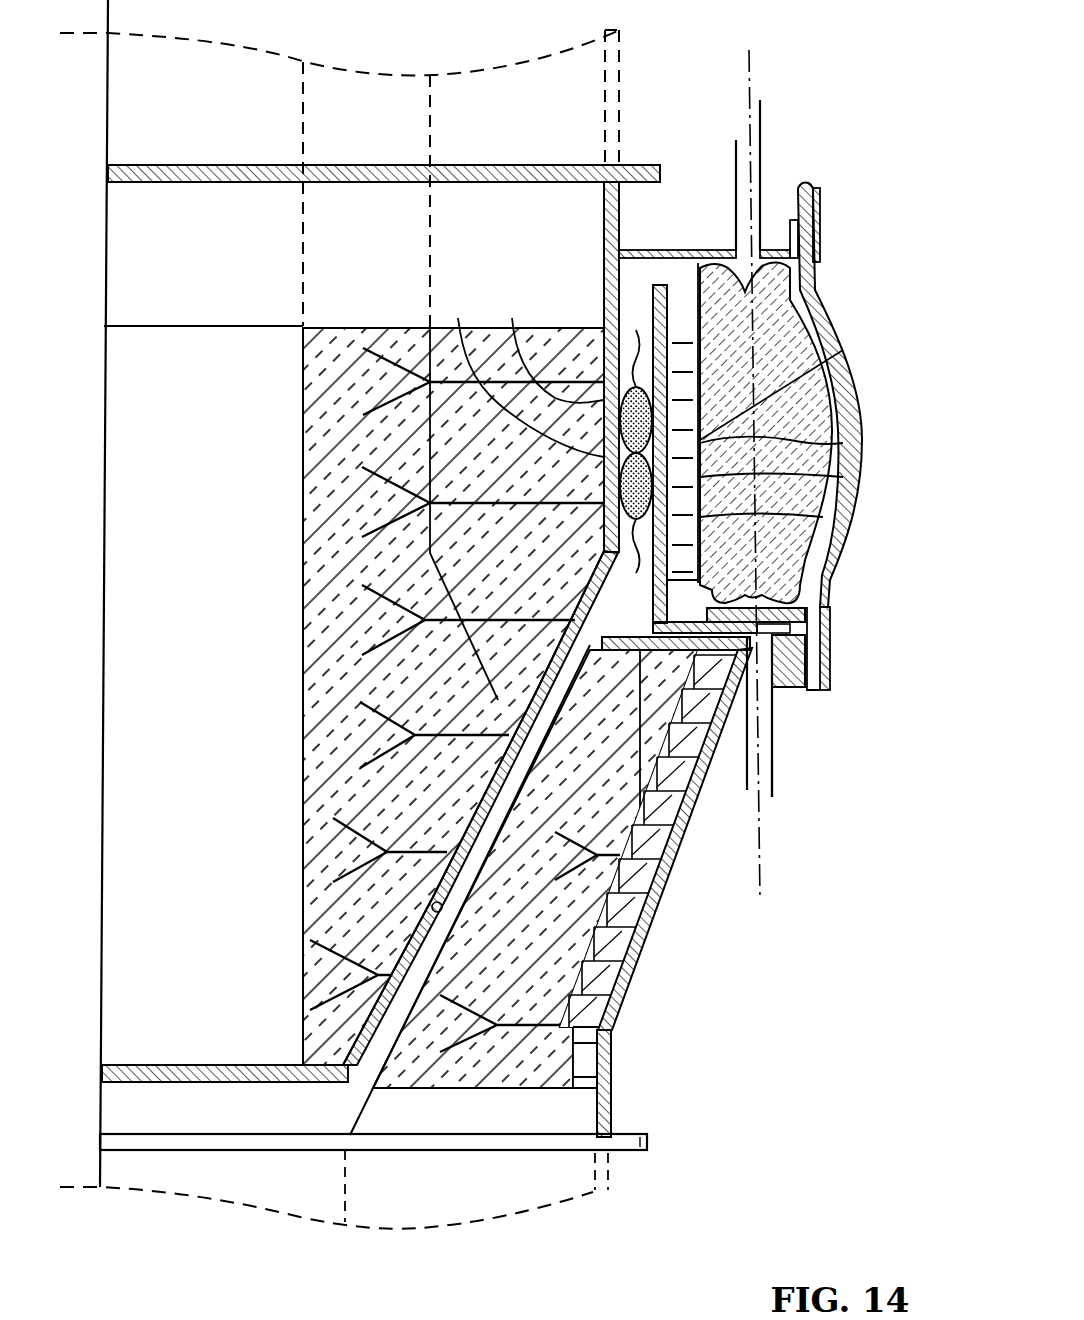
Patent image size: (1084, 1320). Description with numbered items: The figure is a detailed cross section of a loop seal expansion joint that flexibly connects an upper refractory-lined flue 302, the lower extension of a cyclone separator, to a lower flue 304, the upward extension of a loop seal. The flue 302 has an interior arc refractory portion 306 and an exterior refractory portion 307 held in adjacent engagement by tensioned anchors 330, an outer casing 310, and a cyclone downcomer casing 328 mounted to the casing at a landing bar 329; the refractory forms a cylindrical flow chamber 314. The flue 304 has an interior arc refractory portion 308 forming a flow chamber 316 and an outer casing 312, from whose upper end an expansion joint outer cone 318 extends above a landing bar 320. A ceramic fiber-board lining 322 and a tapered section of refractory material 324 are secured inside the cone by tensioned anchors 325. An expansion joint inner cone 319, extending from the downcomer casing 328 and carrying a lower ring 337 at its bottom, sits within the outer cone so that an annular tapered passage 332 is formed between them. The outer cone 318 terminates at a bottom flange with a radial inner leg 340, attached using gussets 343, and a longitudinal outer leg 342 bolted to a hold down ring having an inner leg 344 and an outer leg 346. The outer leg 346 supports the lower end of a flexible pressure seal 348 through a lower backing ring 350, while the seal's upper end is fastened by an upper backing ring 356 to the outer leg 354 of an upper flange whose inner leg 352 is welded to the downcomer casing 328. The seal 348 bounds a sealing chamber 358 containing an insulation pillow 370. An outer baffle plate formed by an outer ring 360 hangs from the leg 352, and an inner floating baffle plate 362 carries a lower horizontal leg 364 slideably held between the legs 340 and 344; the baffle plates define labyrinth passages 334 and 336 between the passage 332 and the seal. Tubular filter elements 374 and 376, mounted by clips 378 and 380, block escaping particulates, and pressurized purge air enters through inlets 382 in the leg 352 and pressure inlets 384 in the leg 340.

The flue 302 is at (495, 88).
The flue 304 is at (576, 1198).
The interior arc refractory portion 306 is at (347, 353).
The exterior refractory portion 307 is at (428, 352).
The interior arc refractory portion 308 is at (477, 1213).
The outer casing 310 is at (615, 95).
The outer casing 312 is at (610, 1173).
The flow chamber 314 is at (212, 355).
The flow chamber 316 is at (250, 1192).
The expansion joint outer cone 318 is at (645, 938).
The expansion joint inner cone 319 is at (432, 905).
The landing bar 320 is at (650, 1145).
The ceramic fiber-board lining 322 is at (640, 882).
The tapered section of refractory material 324 is at (622, 870).
The anchors 325 is at (628, 981).
The cyclone downcomer casing 328 is at (605, 265).
The landing bar 329 is at (660, 173).
The tensioned anchors 330 is at (423, 732).
The annular tapered passage 332 is at (590, 652).
The labyrinth passage 334 is at (650, 305).
The labyrinth passage 336 is at (703, 345).
The lower ring 337 is at (213, 1066).
The inner leg 340 is at (764, 738).
The outer leg 342 is at (785, 690).
The gussets 343 is at (643, 787).
The inner leg 344 is at (823, 611).
The outer leg 346 is at (808, 668).
The flexible pressure seal 348 is at (847, 407).
The lower backing ring 350 is at (826, 685).
The inner leg 352 is at (688, 250).
The outer leg 354 is at (797, 224).
The upper backing ring 356 is at (822, 212).
The sealing chamber 358 is at (687, 610).
The outer ring 360 is at (843, 443).
The inner baffle plate 362 is at (843, 477).
The lower horizontal leg 364 is at (655, 634).
The insulation pillow 370 is at (843, 350).
The tubular filter element 374 is at (519, 373).
The tubular filter element 376 is at (547, 346).
The clips 378 is at (632, 465).
The clips 380 is at (640, 385).
The inlets 382 is at (752, 188).
The pressure inlets 384 is at (773, 771).